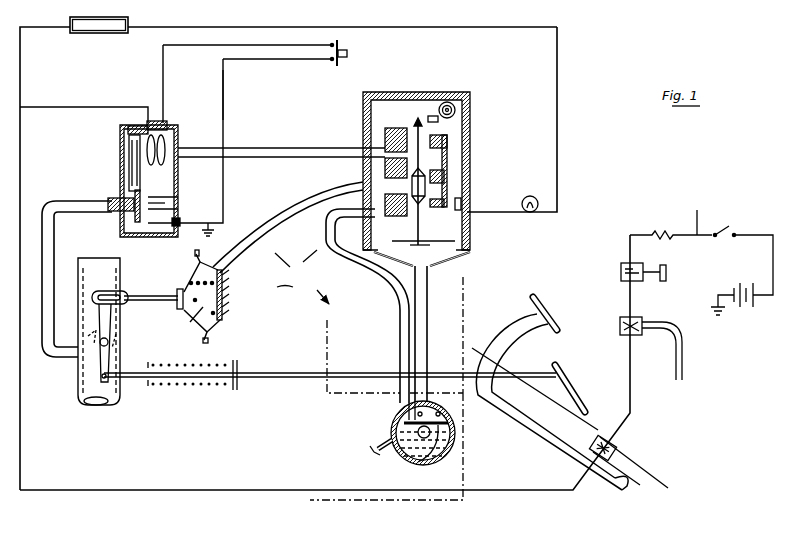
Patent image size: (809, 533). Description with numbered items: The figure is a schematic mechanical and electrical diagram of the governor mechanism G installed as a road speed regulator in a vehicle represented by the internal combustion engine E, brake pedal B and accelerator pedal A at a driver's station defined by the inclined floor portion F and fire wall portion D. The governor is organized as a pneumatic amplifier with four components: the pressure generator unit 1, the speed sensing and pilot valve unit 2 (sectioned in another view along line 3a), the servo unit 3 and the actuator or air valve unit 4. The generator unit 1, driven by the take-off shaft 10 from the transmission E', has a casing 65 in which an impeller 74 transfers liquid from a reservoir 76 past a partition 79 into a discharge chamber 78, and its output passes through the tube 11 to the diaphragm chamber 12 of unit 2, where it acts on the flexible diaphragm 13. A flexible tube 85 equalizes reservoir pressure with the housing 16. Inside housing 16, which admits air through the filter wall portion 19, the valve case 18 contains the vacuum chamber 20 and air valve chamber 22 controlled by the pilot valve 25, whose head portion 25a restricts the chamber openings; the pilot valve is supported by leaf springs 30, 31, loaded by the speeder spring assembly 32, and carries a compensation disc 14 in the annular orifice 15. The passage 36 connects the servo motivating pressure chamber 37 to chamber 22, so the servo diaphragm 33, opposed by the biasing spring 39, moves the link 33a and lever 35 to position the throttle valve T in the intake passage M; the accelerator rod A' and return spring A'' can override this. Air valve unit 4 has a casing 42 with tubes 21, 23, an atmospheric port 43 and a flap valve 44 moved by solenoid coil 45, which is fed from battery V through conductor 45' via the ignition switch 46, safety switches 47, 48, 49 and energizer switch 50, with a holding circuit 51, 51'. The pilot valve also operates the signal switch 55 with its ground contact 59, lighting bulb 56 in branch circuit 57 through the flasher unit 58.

The speed signal producing pressure generator unit 1 is at (384, 417).
The speed sensing and pilot valve unit 2 is at (357, 141).
The servo or motor unit 3 is at (233, 282).
The section line 3a is at (440, 517).
The actuator or energizer unit 4 is at (181, 187).
The take-off shaft 10 is at (372, 441).
The tube 11 is at (428, 322).
The signal receiving diaphragm chamber 12 is at (440, 255).
The flexible diaphragm 13 is at (470, 240).
The compensation disc 14 is at (440, 121).
The annular orifice 15 is at (448, 142).
The housing 16 is at (470, 94).
The valve case or body 18 is at (385, 208).
The filter wall portion 19 is at (363, 108).
The vacuum chamber 20 is at (401, 172).
The tube 21 is at (288, 148).
The air valve chamber 22 is at (404, 177).
The tube 23 is at (57, 236).
The pilot valve 25 is at (452, 172).
The valve head portion 25a is at (448, 184).
The flexible leaf spring 30 is at (410, 126).
The flexible leaf spring 31 is at (392, 228).
The speeder spring assembly 32 is at (432, 100).
The flexible diaphragm 33 is at (195, 266).
The rod or link 33a is at (170, 296).
The control arm or lever 35 is at (110, 316).
The tube or passage 36 is at (290, 196).
The motivating pressure chamber 37 is at (210, 332).
The return or biasing spring 39 is at (200, 318).
The casing 42 is at (124, 157).
The port 43 is at (178, 204).
The flap valve element 44 is at (130, 186).
The solenoid coil 45 is at (174, 143).
The series circuit conductor 45' is at (755, 257).
The ignition switch 46 is at (729, 226).
The safety switch 47 is at (621, 272).
The safety switch 48 is at (620, 325).
The safety switch 49 is at (616, 447).
The governor-energizer switch 50 is at (348, 50).
The holding circuit conductor 51 is at (239, 95).
The holding circuit conductor 51' is at (121, 131).
The signal control switch 55 is at (446, 224).
The light bulb 56 is at (531, 196).
The branch circuit 57 is at (452, 27).
The flasher unit 58 is at (130, 20).
The ground-connected contact 59 is at (427, 236).
The casing or housing 65 is at (402, 452).
The impeller or rotor 74 is at (424, 460).
The reservoir 76 is at (442, 455).
The discharge chamber 78 is at (432, 404).
The partition 79 is at (452, 412).
The flexible tube 85 is at (398, 312).
The accelerator pedal A is at (351, 388).
The rod A' is at (293, 402).
The return spring A'' is at (192, 387).
The brake pedal B is at (522, 320).
The fire wall portion D is at (467, 292).
The internal combustion engine E is at (363, 356).
The transmission E' is at (411, 446).
The inclined floor portion F is at (640, 460).
The governor mechanism G is at (302, 277).
The intake passage or manifold M is at (78, 386).
The throttle valve T is at (118, 332).
The battery V is at (733, 304).